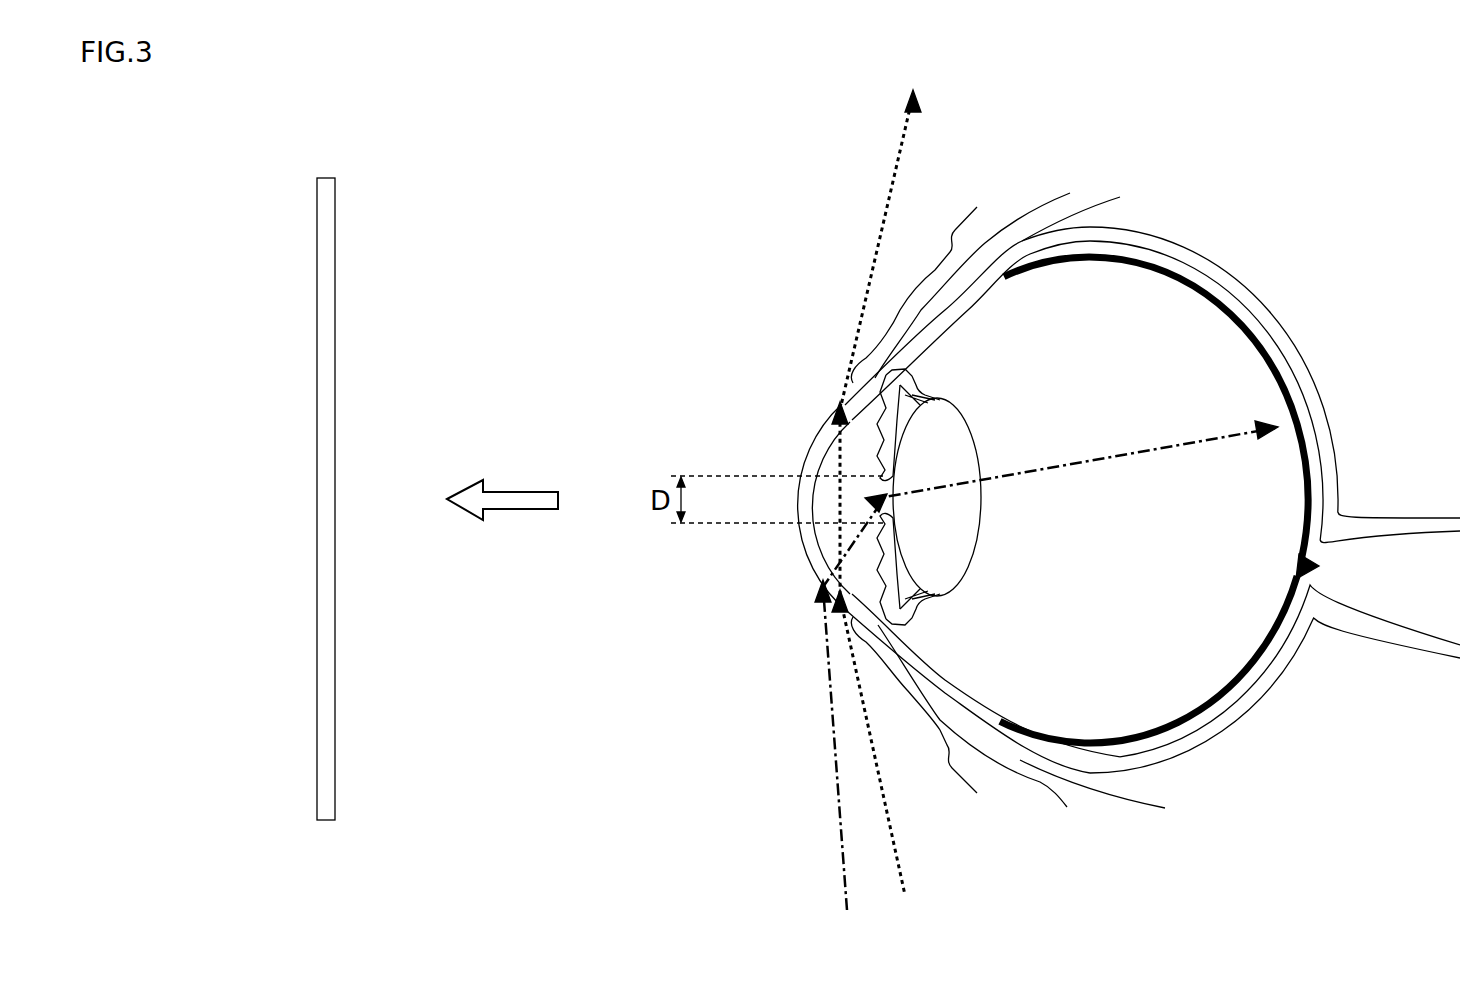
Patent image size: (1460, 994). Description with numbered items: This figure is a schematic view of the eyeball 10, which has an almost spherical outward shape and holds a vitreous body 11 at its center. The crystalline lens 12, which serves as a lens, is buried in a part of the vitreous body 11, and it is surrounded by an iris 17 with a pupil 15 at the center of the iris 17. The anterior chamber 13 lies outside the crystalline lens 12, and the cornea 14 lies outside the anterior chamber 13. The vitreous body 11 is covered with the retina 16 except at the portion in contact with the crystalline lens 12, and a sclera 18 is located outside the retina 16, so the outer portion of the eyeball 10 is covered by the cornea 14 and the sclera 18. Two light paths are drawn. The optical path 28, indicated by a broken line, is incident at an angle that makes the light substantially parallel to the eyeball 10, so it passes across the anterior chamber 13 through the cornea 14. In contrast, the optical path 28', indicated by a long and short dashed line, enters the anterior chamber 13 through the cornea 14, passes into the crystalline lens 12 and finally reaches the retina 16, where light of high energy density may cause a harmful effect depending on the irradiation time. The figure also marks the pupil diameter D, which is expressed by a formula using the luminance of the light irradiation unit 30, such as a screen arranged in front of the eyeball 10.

The eyeball 10 is at (1081, 447).
The vitreous body 11 is at (1205, 338).
The crystalline lens 12 is at (953, 467).
The anterior chamber 13 is at (868, 413).
The cornea 14 is at (815, 465).
The pupil 15 is at (885, 493).
The retina 16 is at (1242, 673).
The iris 17 is at (870, 542).
The sclera 18 is at (1313, 391).
The optical path 28 is at (917, 492).
The optical path 28' is at (1009, 665).
The light irradiation unit 30 is at (325, 820).